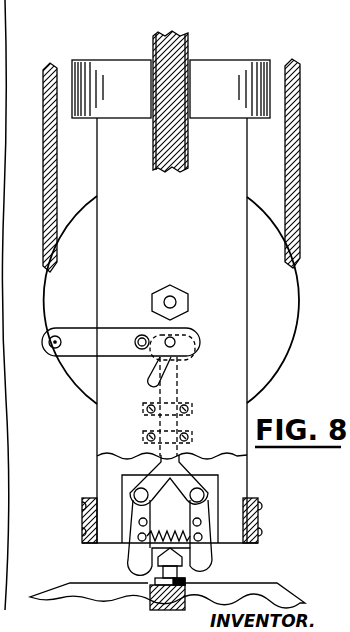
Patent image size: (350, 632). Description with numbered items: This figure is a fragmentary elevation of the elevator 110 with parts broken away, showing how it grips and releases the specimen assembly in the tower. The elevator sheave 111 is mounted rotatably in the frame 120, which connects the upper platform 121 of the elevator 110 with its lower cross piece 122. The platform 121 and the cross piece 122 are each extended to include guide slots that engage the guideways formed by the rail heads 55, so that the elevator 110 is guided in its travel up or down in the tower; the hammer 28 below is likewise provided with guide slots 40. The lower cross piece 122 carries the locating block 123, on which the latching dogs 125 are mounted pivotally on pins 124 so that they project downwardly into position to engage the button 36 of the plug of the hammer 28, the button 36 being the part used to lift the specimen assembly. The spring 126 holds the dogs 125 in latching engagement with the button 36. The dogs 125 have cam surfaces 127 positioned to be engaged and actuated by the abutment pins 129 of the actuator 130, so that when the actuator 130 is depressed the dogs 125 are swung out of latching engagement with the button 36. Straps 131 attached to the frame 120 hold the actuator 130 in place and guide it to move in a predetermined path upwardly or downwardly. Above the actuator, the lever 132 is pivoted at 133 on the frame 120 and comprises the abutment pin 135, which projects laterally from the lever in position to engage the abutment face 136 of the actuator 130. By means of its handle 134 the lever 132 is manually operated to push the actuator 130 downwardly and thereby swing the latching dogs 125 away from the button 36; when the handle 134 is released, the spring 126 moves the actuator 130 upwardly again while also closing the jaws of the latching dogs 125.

The hammer 28 is at (244, 593).
The button 36 is at (182, 563).
The guide slots 40 is at (164, 608).
The heads 55 is at (190, 62).
The elevator 110 is at (258, 196).
The elevator sheave 111 is at (275, 305).
The frame 120 is at (229, 194).
The upper platform 121 is at (127, 50).
The lower cross piece 122 is at (82, 526).
The locating block 123 is at (218, 481).
The pins 124 is at (139, 523).
The latching dogs 125 is at (133, 555).
The spring 126 is at (170, 522).
The cam surfaces 127 is at (213, 503).
The abutment pins 129 is at (134, 489).
The actuator 130 is at (180, 466).
The straps 131 is at (192, 404).
The lever 132 is at (90, 335).
The pivot 133 is at (141, 335).
The handle 134 is at (70, 347).
The abutment pin 135 is at (173, 338).
The abutment face 136 is at (196, 340).